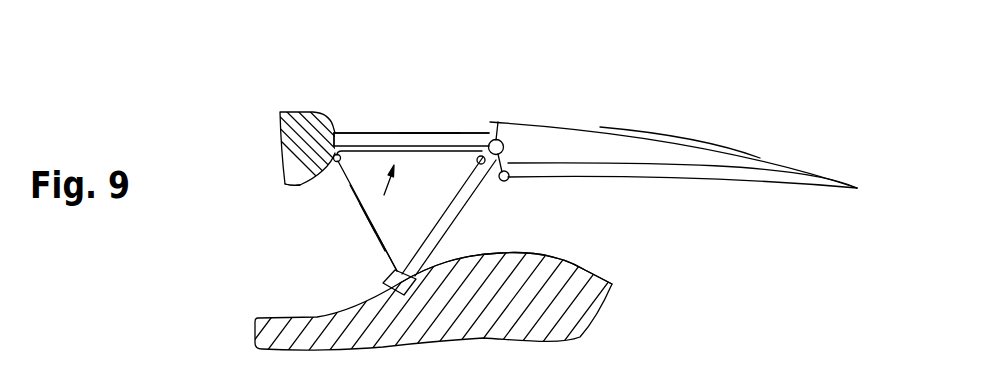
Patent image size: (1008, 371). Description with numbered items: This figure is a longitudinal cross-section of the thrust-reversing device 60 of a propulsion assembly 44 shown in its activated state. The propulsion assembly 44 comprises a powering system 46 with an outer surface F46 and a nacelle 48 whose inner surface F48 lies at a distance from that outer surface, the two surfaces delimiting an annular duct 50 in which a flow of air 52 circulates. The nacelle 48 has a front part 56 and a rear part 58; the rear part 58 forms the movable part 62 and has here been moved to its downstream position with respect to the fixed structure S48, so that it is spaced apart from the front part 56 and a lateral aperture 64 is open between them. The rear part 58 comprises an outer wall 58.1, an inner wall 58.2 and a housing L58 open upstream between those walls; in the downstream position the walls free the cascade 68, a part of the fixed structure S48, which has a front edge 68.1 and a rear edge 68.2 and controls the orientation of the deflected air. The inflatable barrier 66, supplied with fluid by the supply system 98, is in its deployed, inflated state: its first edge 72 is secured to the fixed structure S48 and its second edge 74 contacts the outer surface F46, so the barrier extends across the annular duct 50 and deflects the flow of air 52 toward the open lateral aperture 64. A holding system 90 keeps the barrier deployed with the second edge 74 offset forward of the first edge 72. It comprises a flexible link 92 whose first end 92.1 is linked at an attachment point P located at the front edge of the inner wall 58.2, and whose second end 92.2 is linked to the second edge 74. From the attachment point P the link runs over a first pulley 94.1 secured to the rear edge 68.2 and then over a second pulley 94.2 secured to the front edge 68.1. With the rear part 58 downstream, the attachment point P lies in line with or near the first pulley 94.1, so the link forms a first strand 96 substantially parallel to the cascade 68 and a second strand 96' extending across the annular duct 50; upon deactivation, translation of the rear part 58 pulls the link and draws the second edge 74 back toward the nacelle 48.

The propulsion assembly 44 is at (688, 147).
The powering system 46 is at (462, 297).
The nacelle 48 is at (299, 117).
The annular duct 50 is at (274, 270).
The flow of air 52 is at (354, 235).
The front part 56 is at (278, 117).
The rear part 58 is at (673, 147).
The outer wall 58.1 is at (578, 124).
The inner wall 58.2 is at (694, 178).
The thrust-reversing device 60 is at (430, 133).
The movable part 62 is at (710, 132).
The lateral aperture 64 is at (411, 116).
The inflatable barrier 66 is at (457, 237).
The cascade 68 is at (402, 95).
The front edge 68.1 is at (342, 128).
The rear edge 68.2 is at (500, 122).
The first edge 72 is at (505, 158).
The second edge 74 is at (383, 286).
The holding system 90 is at (388, 271).
The flexible link 92 is at (352, 192).
The first end 92.1 is at (553, 196).
The second end 92.2 is at (378, 243).
The first pulley 94.1 is at (477, 163).
The second pulley 94.2 is at (333, 159).
The first strand 96 is at (409, 109).
The second strand 96' is at (285, 225).
The supply system 98 is at (509, 141).
The outer surface F46 is at (583, 254).
The inner surface F48 is at (286, 188).
The housing L58 is at (682, 163).
The attachment point P is at (504, 182).
The fixed structure S48 is at (348, 133).